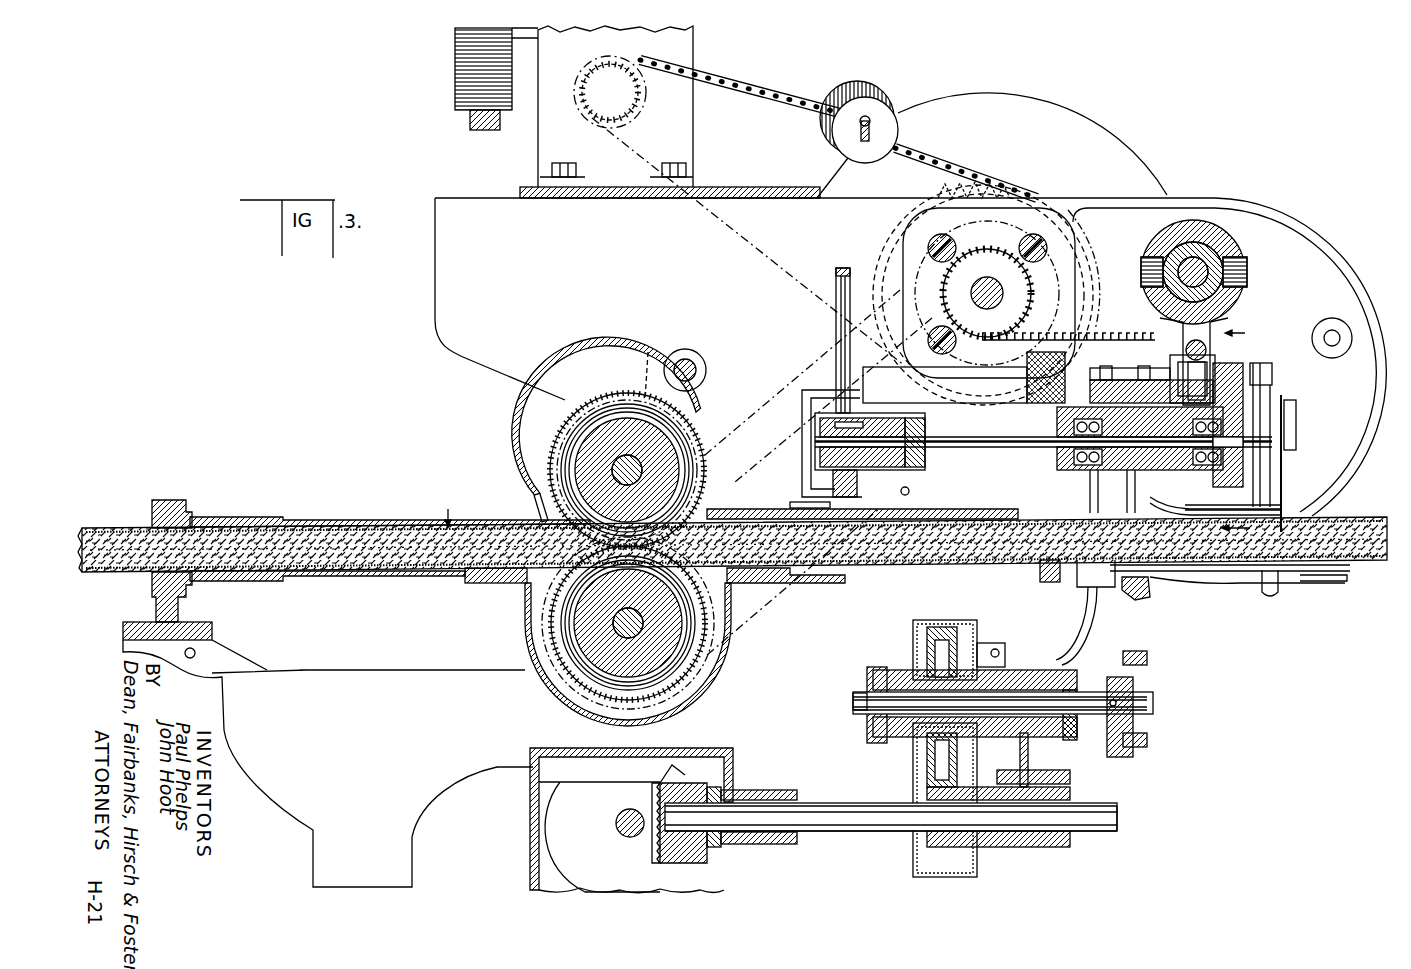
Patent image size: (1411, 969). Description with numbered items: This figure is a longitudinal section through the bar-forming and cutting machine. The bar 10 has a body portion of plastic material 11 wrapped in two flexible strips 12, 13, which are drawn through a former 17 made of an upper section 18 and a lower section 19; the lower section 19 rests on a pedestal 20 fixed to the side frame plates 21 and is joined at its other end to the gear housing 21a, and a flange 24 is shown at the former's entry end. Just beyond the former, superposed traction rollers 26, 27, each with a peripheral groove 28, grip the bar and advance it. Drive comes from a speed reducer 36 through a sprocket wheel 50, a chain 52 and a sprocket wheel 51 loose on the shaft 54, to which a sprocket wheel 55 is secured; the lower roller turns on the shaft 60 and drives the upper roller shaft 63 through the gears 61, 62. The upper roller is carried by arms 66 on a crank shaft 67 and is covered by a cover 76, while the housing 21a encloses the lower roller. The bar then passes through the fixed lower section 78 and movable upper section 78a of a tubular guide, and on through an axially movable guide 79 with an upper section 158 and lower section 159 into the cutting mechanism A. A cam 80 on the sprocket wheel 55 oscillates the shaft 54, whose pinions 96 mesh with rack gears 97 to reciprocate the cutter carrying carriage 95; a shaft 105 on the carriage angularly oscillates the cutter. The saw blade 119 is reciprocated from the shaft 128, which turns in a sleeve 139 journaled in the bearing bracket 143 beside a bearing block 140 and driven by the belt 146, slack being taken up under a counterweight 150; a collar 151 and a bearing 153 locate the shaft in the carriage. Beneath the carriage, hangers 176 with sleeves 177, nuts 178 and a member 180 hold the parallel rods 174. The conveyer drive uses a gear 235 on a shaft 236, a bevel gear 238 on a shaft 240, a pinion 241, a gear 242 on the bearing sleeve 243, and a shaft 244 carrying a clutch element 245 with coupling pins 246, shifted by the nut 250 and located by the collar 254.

The bar 10 is at (1033, 408).
The body portion of plastic material 11 is at (858, 426).
The wrapper strip 12 is at (340, 527).
The wrapper strip 13 is at (356, 562).
The former 17 is at (395, 526).
The upper section 18 is at (242, 518).
The lower section 19 is at (246, 583).
The pedestal 20 is at (150, 620).
The side frame plates 21 is at (284, 668).
The gear housing 21a is at (527, 640).
The flange 24 is at (122, 531).
The lower traction roller 26 is at (585, 606).
The upper traction roller 27 is at (590, 450).
The peripheral groove 28 is at (578, 432).
The speed reducer 36 is at (693, 40).
The sprocket wheel 50 is at (645, 120).
The sprocket wheel 51 is at (962, 186).
The chain 52 is at (788, 92).
The shaft 54 is at (971, 293).
The sprocket wheel 55 is at (903, 268).
The shaft 60 is at (576, 680).
The gear 61 is at (540, 684).
The gear 62 is at (700, 420).
The shaft 63 is at (612, 472).
The arms 66 is at (642, 365).
The crank shaft 67 is at (687, 349).
The cover 76 is at (592, 382).
The lower section 78 is at (838, 584).
The upper section 78a is at (904, 512).
The axially movable guide 79 is at (1262, 586).
The cam 80 is at (1005, 108).
The cutter carrying carriage 95 is at (1102, 324).
The pinions 96 is at (1000, 256).
The rack gears 97 is at (1070, 331).
The shaft 105 is at (1228, 268).
The saw blade 119 is at (1285, 506).
The shaft 128 is at (976, 438).
The sleeve 139 is at (910, 492).
The bearing block 140 is at (803, 410).
The bearing bracket 143 is at (1038, 377).
The belt 146 is at (835, 338).
The counterweight 150 is at (885, 100).
The collar 151 is at (1056, 452).
The bearing 153 is at (1118, 500).
The upper section 158 is at (1182, 497).
The lower section 159 is at (1196, 584).
The rods 174 is at (1325, 582).
The hangers 176 is at (1090, 487).
The sleeves 177 is at (1086, 594).
The nuts 178 is at (1040, 572).
The member 180 is at (1140, 594).
The gear 235 is at (531, 872).
The shaft 236 is at (622, 836).
The bevel gear 238 is at (674, 778).
The shaft 240 is at (850, 832).
The pinion 241 is at (920, 856).
The gear 242 is at (913, 633).
The bearing sleeve 243 is at (1046, 670).
The shaft 244 is at (1150, 698).
The clutch element 245 is at (1150, 738).
The coupling pins 246 is at (1150, 660).
The nut 250 is at (866, 686).
The collar 254 is at (1072, 740).
The cutting mechanism A is at (1290, 500).